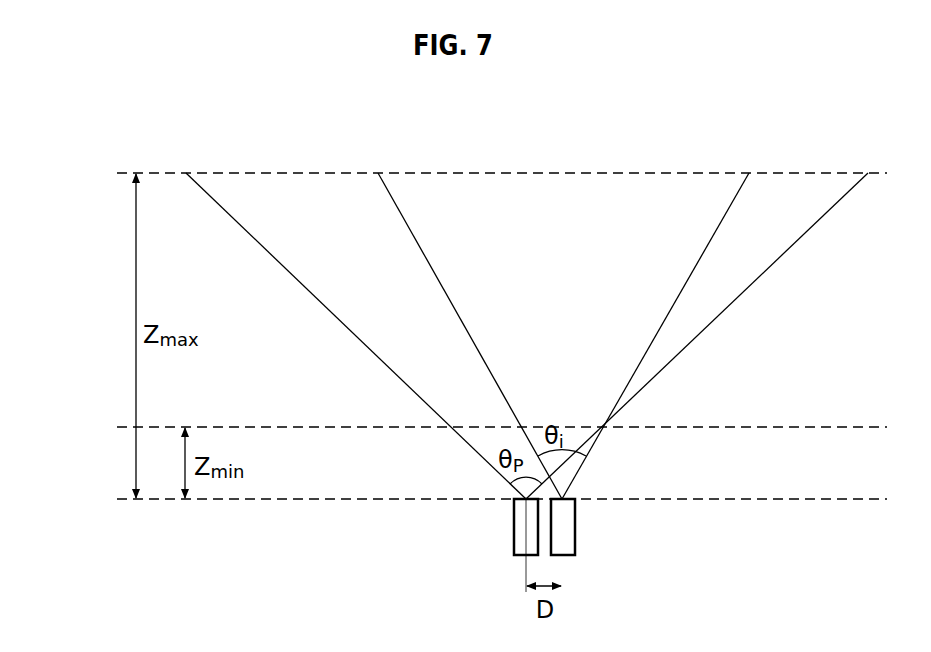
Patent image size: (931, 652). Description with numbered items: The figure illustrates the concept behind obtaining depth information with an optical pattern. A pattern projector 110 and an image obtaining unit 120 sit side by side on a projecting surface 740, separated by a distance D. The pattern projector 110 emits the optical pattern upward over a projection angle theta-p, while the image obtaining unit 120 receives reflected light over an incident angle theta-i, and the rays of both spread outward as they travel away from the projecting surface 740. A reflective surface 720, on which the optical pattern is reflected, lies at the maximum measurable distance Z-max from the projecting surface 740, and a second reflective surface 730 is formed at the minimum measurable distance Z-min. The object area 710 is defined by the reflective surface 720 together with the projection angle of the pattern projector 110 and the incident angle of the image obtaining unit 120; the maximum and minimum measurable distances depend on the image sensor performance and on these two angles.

The object area 710 is at (551, 210).
The reflective surface 720 is at (126, 173).
The reflective surface 730 is at (126, 427).
The projecting surface 740 is at (126, 499).
The pattern projector 110 is at (514, 535).
The image obtaining unit 120 is at (575, 535).